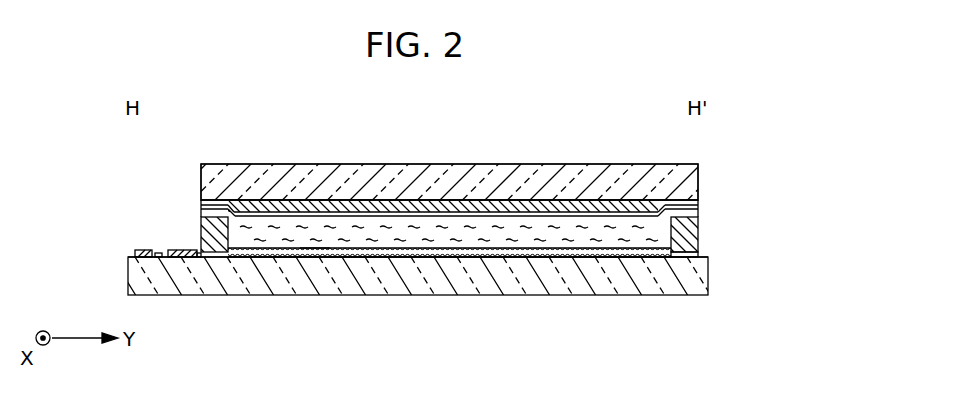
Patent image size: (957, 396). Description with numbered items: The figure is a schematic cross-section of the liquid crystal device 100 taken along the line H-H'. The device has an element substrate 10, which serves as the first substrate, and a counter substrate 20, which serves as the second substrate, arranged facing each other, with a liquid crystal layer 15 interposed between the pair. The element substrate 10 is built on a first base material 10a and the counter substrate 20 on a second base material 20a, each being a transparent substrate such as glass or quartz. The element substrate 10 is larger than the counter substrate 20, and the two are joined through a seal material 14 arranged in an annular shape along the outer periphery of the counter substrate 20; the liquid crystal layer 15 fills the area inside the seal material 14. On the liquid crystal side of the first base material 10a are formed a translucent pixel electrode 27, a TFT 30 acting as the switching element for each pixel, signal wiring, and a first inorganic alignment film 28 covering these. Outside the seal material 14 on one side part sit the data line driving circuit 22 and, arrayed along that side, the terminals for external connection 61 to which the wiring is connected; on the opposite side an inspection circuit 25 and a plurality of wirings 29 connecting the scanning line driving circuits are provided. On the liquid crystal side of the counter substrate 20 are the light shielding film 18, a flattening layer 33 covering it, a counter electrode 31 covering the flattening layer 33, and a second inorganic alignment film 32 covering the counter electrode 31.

The liquid crystal device 100 is at (599, 84).
The element substrate 10 is at (781, 248).
The first base material 10a is at (700, 272).
The seal material 14 is at (693, 220).
The liquid crystal layer 15 is at (674, 240).
The light shielding film 18 is at (229, 211).
The counter substrate 20 is at (781, 155).
The second base material 20a is at (690, 183).
The data line driving circuit 22 is at (191, 250).
The inspection circuit 25 is at (637, 257).
The pixel electrode 27 is at (312, 250).
The first inorganic alignment film 28 is at (450, 241).
The wirings 29 is at (661, 257).
The TFT 30 is at (315, 315).
The counter electrode 31 is at (597, 213).
The second inorganic alignment film 32 is at (496, 214).
The flattening layer 33 is at (372, 203).
The terminals for external connection 61 is at (146, 250).